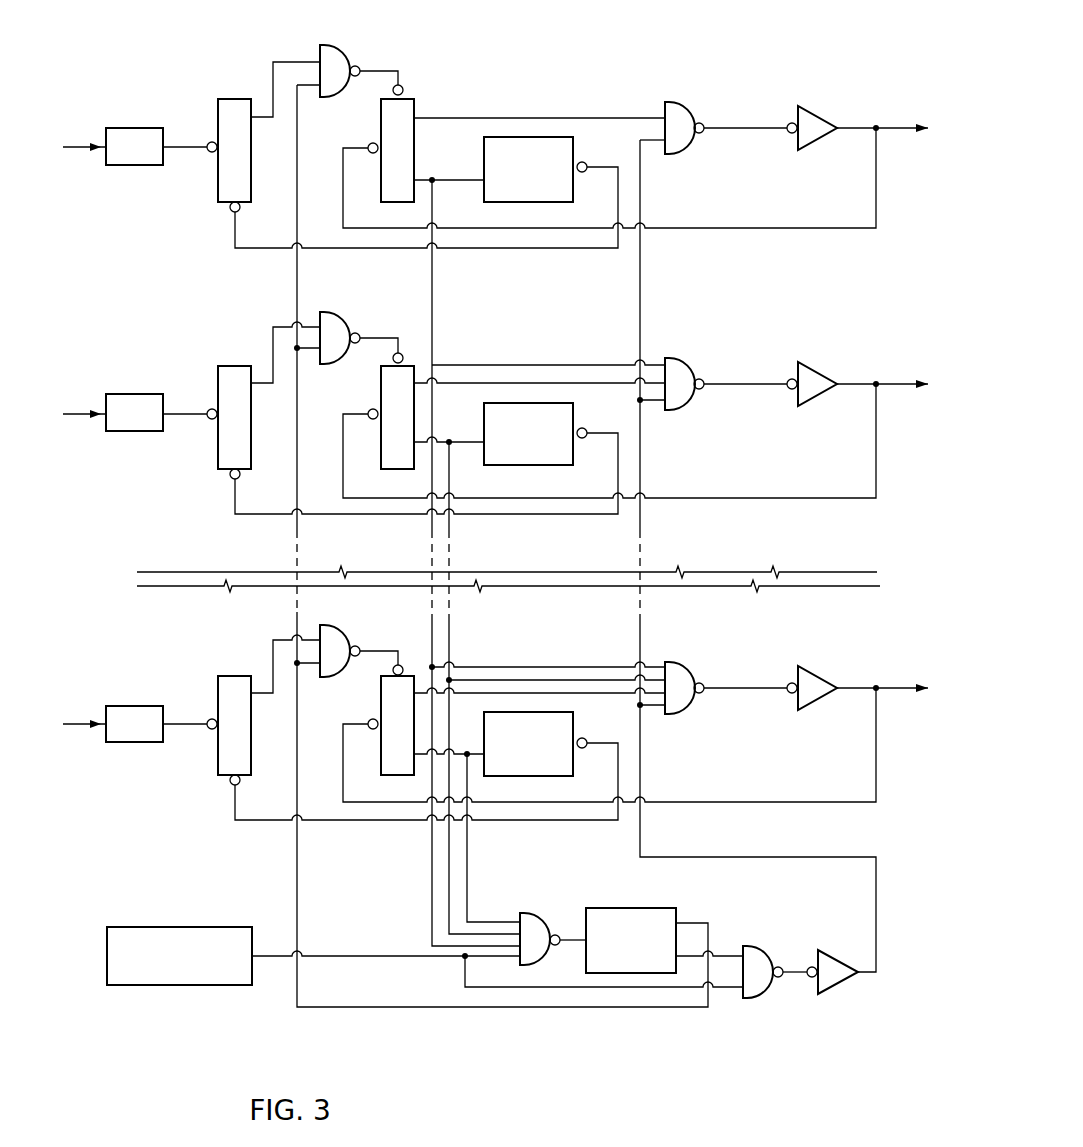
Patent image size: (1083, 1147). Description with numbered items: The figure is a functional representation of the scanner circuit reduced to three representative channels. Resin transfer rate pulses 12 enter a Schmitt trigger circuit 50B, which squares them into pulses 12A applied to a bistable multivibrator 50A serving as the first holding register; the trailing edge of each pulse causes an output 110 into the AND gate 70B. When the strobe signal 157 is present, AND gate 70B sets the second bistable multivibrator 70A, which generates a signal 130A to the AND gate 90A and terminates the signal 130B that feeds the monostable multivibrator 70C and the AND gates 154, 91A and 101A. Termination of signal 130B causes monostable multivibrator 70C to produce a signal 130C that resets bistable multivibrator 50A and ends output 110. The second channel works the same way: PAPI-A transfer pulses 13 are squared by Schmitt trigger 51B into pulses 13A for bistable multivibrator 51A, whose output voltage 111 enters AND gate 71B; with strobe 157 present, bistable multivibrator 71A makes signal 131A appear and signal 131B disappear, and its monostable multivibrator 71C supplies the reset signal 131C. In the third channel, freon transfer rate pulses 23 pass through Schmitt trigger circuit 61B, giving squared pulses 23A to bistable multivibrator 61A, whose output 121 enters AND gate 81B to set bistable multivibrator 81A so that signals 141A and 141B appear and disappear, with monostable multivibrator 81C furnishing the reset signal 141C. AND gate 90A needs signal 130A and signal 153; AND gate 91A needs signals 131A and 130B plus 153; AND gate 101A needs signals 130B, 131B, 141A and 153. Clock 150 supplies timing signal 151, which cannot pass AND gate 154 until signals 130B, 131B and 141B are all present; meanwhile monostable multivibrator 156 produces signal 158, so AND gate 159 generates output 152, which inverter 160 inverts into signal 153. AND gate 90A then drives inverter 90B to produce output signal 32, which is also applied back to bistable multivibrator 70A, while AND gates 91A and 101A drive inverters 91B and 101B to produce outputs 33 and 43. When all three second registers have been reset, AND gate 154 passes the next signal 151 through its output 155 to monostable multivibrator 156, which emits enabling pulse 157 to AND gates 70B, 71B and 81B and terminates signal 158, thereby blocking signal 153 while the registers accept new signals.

The resin transfer rate pulses 12 is at (78, 150).
The squared pulses 12A is at (183, 150).
The Schmitt trigger circuit 50B is at (140, 128).
The bistable multivibrator 50A is at (222, 99).
The output 110 is at (282, 60).
The AND gate 70B is at (338, 57).
The bistable multivibrator 70A is at (418, 108).
The monostable multivibrator 70C is at (575, 142).
The signal 130A is at (557, 117).
The signal 130B is at (443, 178).
The signal 130C is at (540, 250).
The AND gate 90A is at (683, 107).
The inverter 90B is at (818, 112).
The output signal 32 is at (895, 127).
The strobe signal 157 is at (297, 188).
The signal 153 is at (641, 302).
The PAPI-A transfer pulses 13 is at (78, 418).
The squared pulses 13A is at (183, 418).
The Schmitt trigger 51B is at (140, 394).
The bistable multivibrator 51A is at (232, 366).
The output voltage 111 is at (268, 385).
The AND gate 71B is at (343, 323).
The bistable multivibrator 71A is at (381, 388).
The monostable multivibrator 71C is at (573, 404).
The signal 131A is at (490, 386).
The signal 131B is at (472, 446).
The reset line 131C is at (613, 465).
The AND gate 91A is at (688, 366).
The inverter 91B is at (818, 372).
The signal 33 is at (895, 383).
The freon transfer rate pulses 23 is at (78, 727).
The squared pulses 23A is at (190, 728).
The Schmitt trigger circuit 61B is at (140, 706).
The bistable multivibrator 61A is at (217, 675).
The bistable output line 121 is at (273, 650).
The AND gate 81B is at (343, 635).
The bistable multivibrator 81A is at (381, 698).
The monostable multivibrator 81C is at (573, 716).
The signal 141A is at (497, 690).
The signal 141B is at (478, 758).
The reset line 141C is at (515, 827).
The AND gate 101A is at (688, 663).
The inverter 101B is at (818, 672).
The signal 43 is at (774, 804).
The clock 150 is at (185, 986).
The timing signal 151 is at (352, 959).
The AND gate 154 is at (533, 914).
The NAND output line 155 is at (572, 942).
The monostable multivibrator 156 is at (628, 908).
The signal 158 is at (735, 955).
The AND gate 159 is at (760, 997).
The output 152 is at (796, 976).
The inverter 160 is at (848, 984).